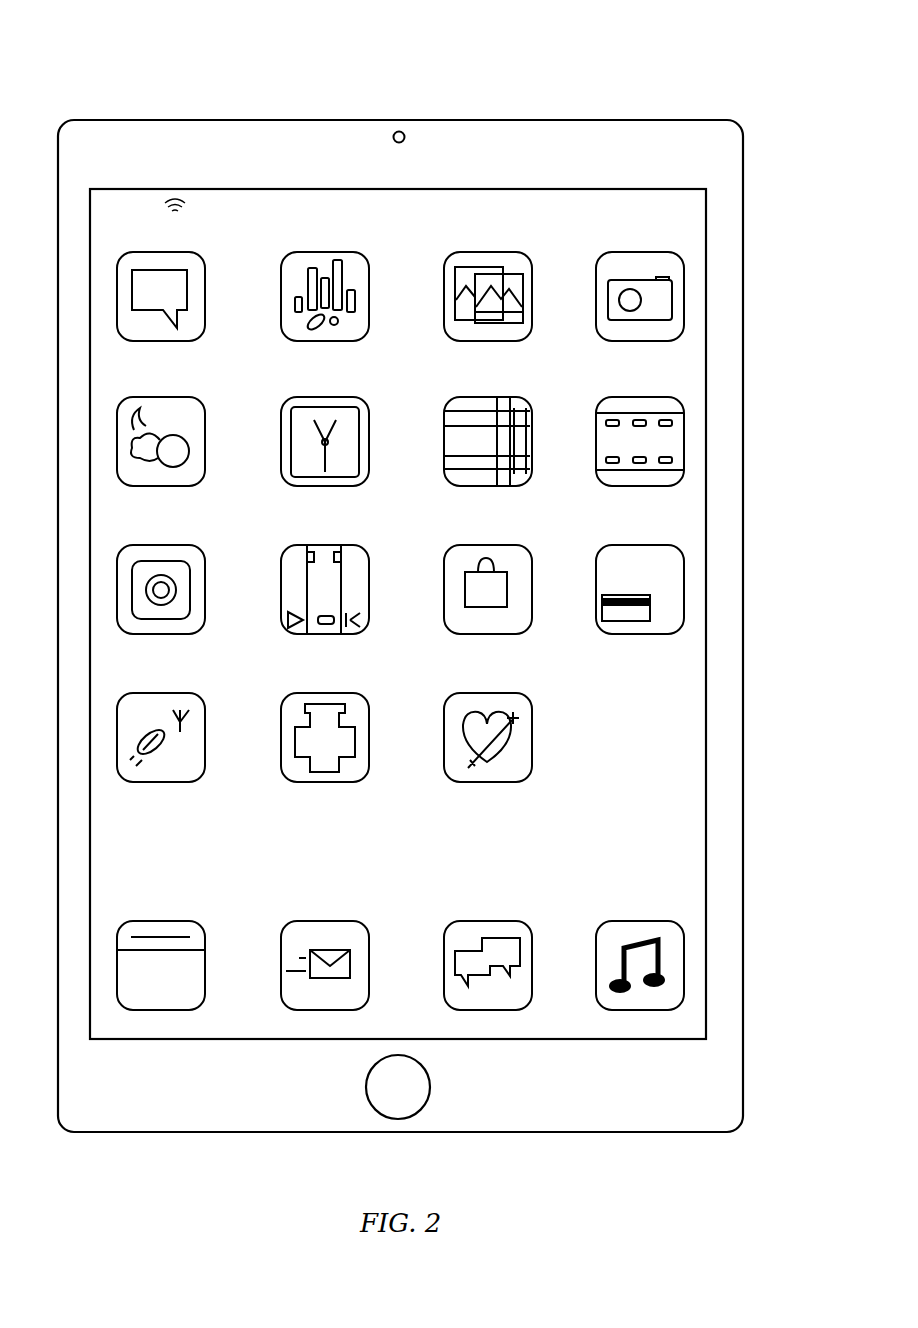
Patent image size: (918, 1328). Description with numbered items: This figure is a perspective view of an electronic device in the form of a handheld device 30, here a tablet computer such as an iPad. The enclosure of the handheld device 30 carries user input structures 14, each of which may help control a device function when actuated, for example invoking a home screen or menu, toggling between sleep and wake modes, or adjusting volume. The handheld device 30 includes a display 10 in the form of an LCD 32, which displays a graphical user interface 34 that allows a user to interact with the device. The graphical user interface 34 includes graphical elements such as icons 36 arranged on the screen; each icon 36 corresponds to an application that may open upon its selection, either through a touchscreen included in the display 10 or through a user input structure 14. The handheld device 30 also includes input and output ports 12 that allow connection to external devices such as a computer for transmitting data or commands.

The display 10 is at (684, 809).
The input and output (I/O) port 12 is at (118, 120).
The user input structure 14 is at (660, 120).
The handheld device 30 is at (66, 69).
The LCD 32 is at (690, 718).
The graphical user interface (GUI) 34 is at (114, 820).
The icon 36 is at (490, 252).